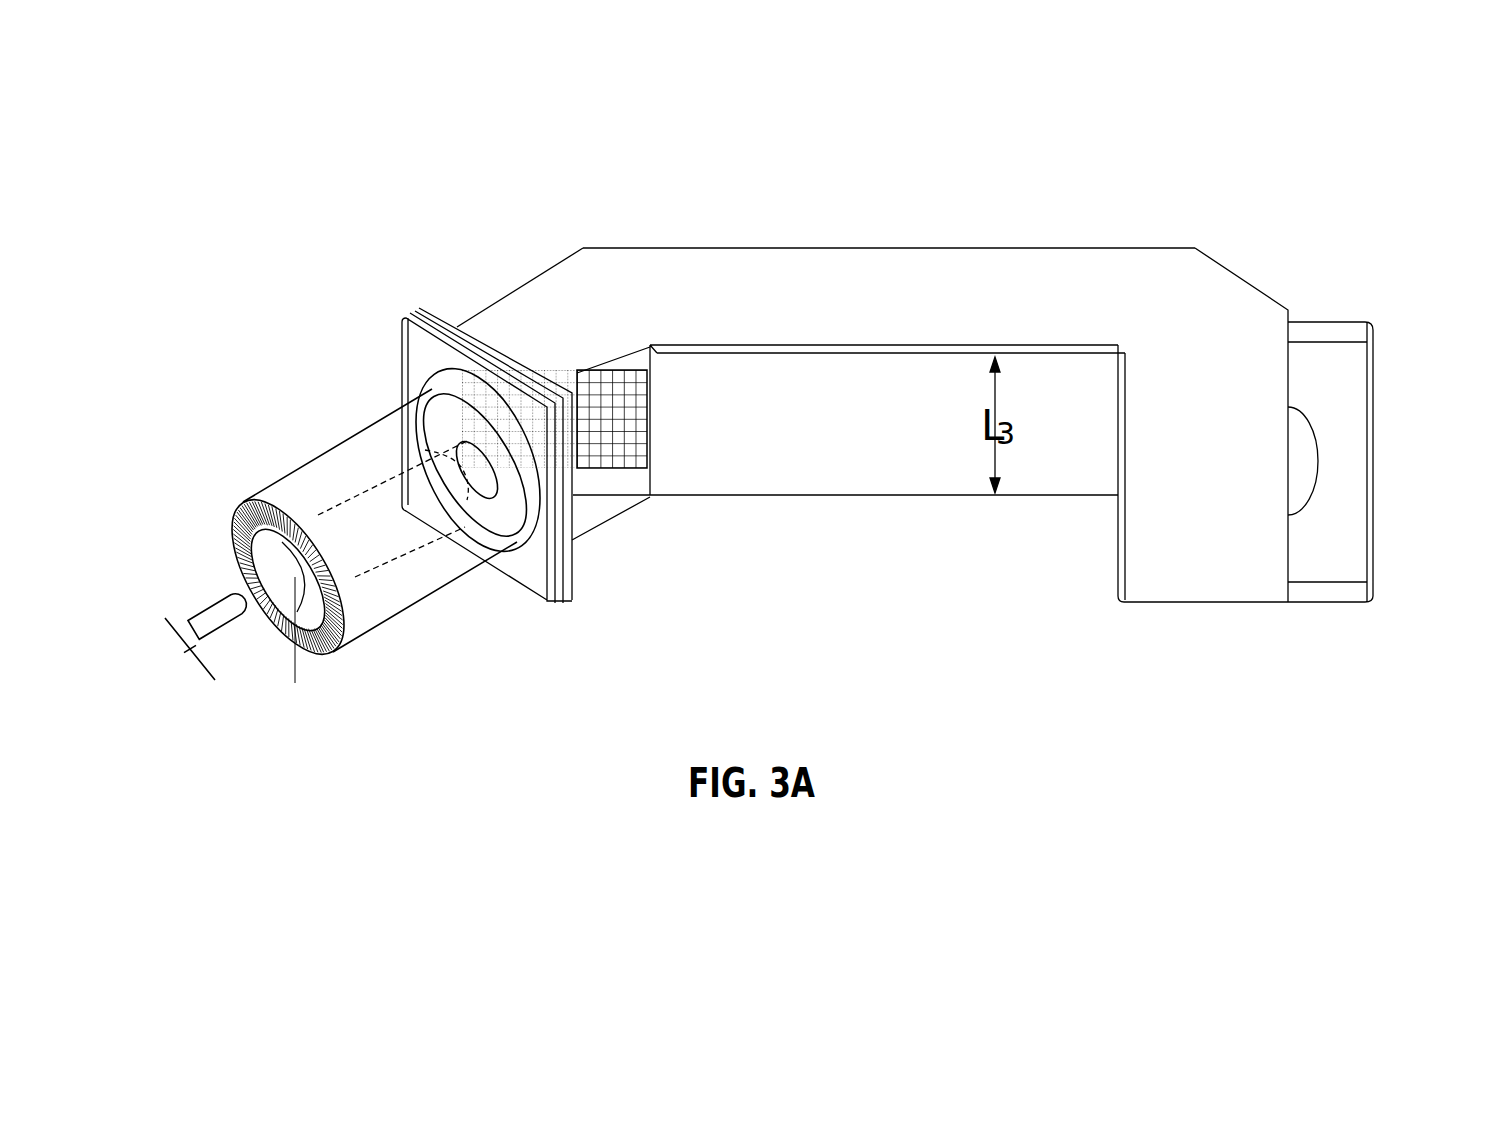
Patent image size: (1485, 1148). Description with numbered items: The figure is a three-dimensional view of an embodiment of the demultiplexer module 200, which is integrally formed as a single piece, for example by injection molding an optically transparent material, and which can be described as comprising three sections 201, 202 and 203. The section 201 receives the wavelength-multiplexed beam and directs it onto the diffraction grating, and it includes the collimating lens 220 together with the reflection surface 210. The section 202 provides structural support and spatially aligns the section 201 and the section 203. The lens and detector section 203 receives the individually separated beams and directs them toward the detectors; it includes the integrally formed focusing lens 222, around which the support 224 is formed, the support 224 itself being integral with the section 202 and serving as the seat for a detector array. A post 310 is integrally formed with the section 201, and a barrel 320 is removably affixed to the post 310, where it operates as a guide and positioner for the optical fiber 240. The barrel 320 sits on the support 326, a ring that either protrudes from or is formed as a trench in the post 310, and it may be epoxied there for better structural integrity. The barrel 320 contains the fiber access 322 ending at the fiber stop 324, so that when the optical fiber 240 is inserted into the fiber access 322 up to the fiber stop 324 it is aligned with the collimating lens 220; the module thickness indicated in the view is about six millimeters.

The demultiplexer module 200 is at (903, 436).
The section 201 is at (523, 283).
The section 202 is at (910, 248).
The section 203 is at (1158, 603).
The reflection surface 210 is at (613, 500).
The collimating lens 220 is at (430, 380).
The focusing lens 222 is at (1307, 452).
The support 224 is at (1325, 320).
The optical fiber 240 is at (212, 610).
The post 310 is at (557, 601).
The barrel 320 is at (310, 460).
The fiber access 322 is at (297, 580).
The fiber stop 324 is at (402, 406).
The support 326 is at (520, 553).